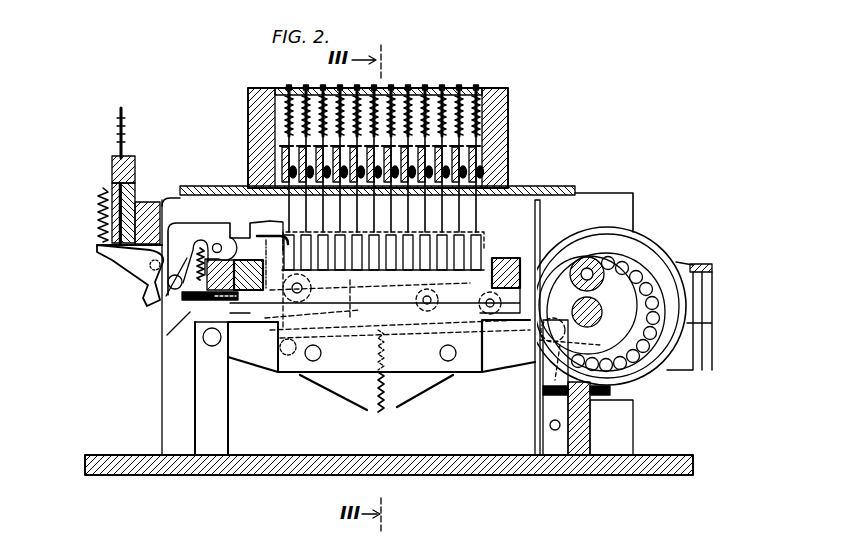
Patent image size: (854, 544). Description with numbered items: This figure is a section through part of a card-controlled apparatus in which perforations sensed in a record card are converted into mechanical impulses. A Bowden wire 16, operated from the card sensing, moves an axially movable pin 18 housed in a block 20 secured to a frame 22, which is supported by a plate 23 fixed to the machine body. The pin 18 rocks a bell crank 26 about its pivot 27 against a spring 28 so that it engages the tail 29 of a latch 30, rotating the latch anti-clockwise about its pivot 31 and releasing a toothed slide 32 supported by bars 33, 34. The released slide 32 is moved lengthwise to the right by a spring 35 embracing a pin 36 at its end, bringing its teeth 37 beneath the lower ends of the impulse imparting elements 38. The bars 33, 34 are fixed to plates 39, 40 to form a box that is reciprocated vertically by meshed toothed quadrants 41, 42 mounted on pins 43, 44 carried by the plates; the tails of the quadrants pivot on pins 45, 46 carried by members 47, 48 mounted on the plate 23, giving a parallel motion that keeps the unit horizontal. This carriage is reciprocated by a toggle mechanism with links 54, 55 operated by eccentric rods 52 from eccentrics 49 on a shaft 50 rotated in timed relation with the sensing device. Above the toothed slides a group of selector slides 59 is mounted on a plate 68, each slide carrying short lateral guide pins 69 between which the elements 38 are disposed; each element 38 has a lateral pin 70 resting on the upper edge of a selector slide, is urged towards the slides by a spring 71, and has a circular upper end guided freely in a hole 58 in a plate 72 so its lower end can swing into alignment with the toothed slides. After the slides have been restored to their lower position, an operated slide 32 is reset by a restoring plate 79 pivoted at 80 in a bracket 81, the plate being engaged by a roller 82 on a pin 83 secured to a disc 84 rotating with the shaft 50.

The Bowden wire 16 is at (118, 126).
The axially movable pin 18 is at (138, 190).
The block 20 is at (112, 172).
The frame 22 is at (170, 392).
The plate 23 is at (150, 472).
The bell crank 26 is at (125, 268).
The pivot 27 is at (150, 279).
The spring 28 is at (100, 230).
The tail 29 is at (160, 304).
The latch 30 is at (190, 230).
The pivot 31 is at (216, 242).
The toothed slide 32 is at (256, 240).
The bar 33 is at (242, 316).
The bar 34 is at (502, 258).
The spring 35 is at (203, 306).
The pin 36 is at (185, 305).
The teeth 37 is at (460, 244).
The impulse imparting element 38 is at (470, 209).
The plate 39 is at (398, 373).
The plate 40 is at (406, 346).
The toothed quadrant 41 is at (338, 397).
The toothed quadrant 42 is at (420, 391).
The pin 43 is at (321, 353).
The pin 44 is at (440, 353).
The pin 45 is at (212, 346).
The pin 46 is at (565, 337).
The member 47 is at (222, 417).
The member 48 is at (542, 447).
The eccentric 49 is at (640, 362).
The shaft 50 is at (602, 312).
The eccentric rod 52 is at (594, 233).
The link 54 is at (246, 366).
The link 55 is at (283, 222).
The hole 58 is at (306, 88).
The selector slide 59 is at (470, 155).
The plate 68 is at (546, 186).
The guide element 69 is at (470, 173).
The laterally extending pin 70 is at (282, 150).
The spring 71 is at (470, 112).
The plate 72 is at (480, 95).
The restoring plate 79 is at (534, 387).
The pivot 80 is at (560, 425).
The bracket 81 is at (552, 450).
The roller 82 is at (598, 262).
The pin 83 is at (588, 305).
The disc 84 is at (610, 292).